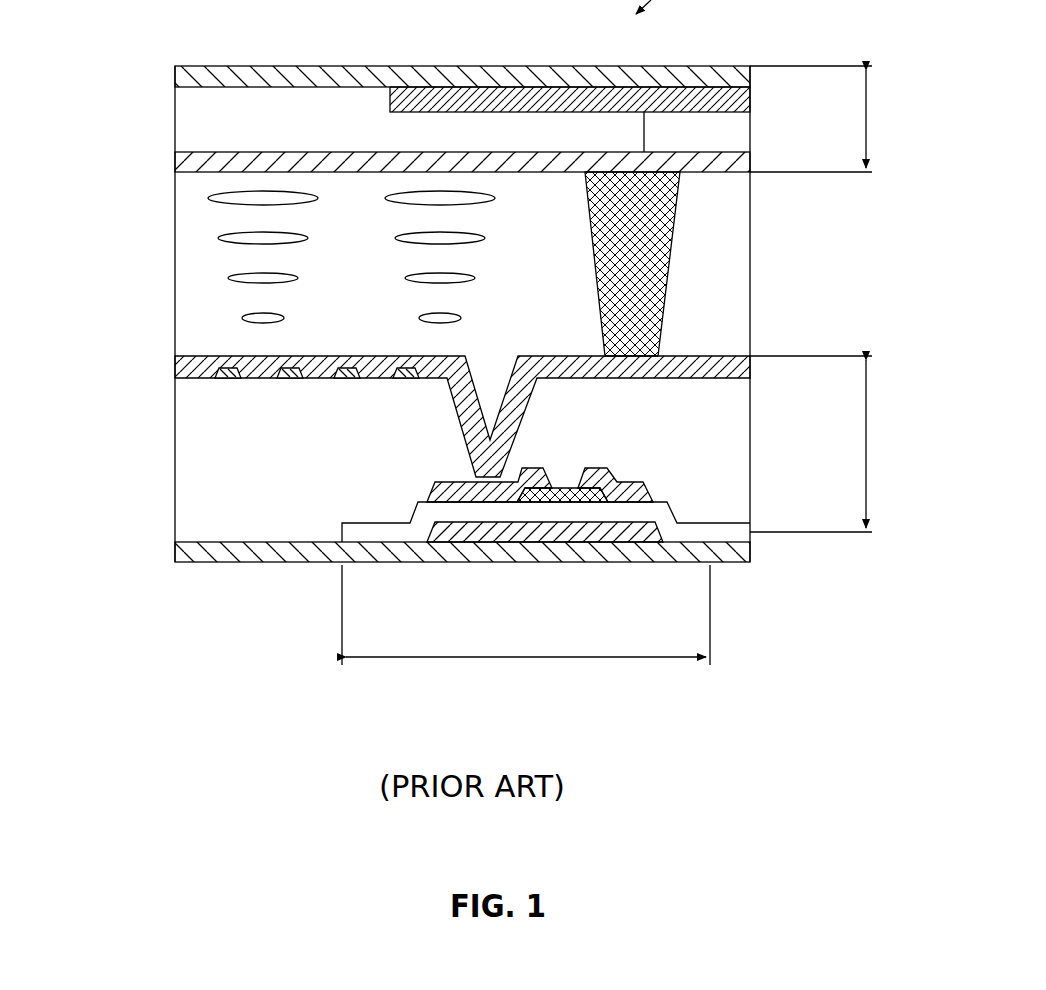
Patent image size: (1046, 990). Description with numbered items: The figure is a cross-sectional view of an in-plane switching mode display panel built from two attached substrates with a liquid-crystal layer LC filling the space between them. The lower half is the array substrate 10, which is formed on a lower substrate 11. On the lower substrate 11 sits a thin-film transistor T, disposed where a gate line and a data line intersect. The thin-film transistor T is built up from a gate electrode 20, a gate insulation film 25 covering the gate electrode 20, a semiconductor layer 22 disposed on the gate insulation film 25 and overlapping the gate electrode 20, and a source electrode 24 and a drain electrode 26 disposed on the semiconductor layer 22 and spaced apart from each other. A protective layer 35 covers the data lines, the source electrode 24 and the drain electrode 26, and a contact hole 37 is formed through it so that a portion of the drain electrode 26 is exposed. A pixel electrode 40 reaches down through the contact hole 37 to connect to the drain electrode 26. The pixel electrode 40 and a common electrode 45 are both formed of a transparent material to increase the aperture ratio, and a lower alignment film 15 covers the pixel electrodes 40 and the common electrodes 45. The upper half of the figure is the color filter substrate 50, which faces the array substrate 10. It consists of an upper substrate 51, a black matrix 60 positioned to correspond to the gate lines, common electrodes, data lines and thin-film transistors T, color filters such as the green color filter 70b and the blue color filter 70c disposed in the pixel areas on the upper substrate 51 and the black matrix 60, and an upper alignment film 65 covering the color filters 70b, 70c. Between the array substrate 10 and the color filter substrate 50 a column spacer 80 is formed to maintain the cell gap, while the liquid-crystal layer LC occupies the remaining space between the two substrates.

The lower substrate 11 is at (180, 551).
The array substrate 10 is at (826, 444).
The lower alignment film 15 is at (748, 372).
The gate electrode 20 is at (542, 532).
The semiconductor layer 22 is at (558, 488).
The source electrode 24 is at (630, 492).
The gate insulation film 25 is at (708, 532).
The drain electrode 26 is at (473, 495).
The protective layer 35 is at (735, 465).
The contact hole 37 is at (499, 389).
The pixel electrode 40 is at (290, 378).
The common electrode 45 is at (228, 378).
The color filter substrate 50 is at (826, 119).
The upper substrate 51 is at (180, 75).
The black matrix 60 is at (742, 98).
The upper alignment film 65 is at (740, 160).
The green color filter 70b is at (182, 125).
The blue color filter 70c is at (730, 130).
The column spacer 80 is at (648, 255).
The liquid-crystal layer LC is at (185, 320).
The thin-film transistor T is at (526, 628).